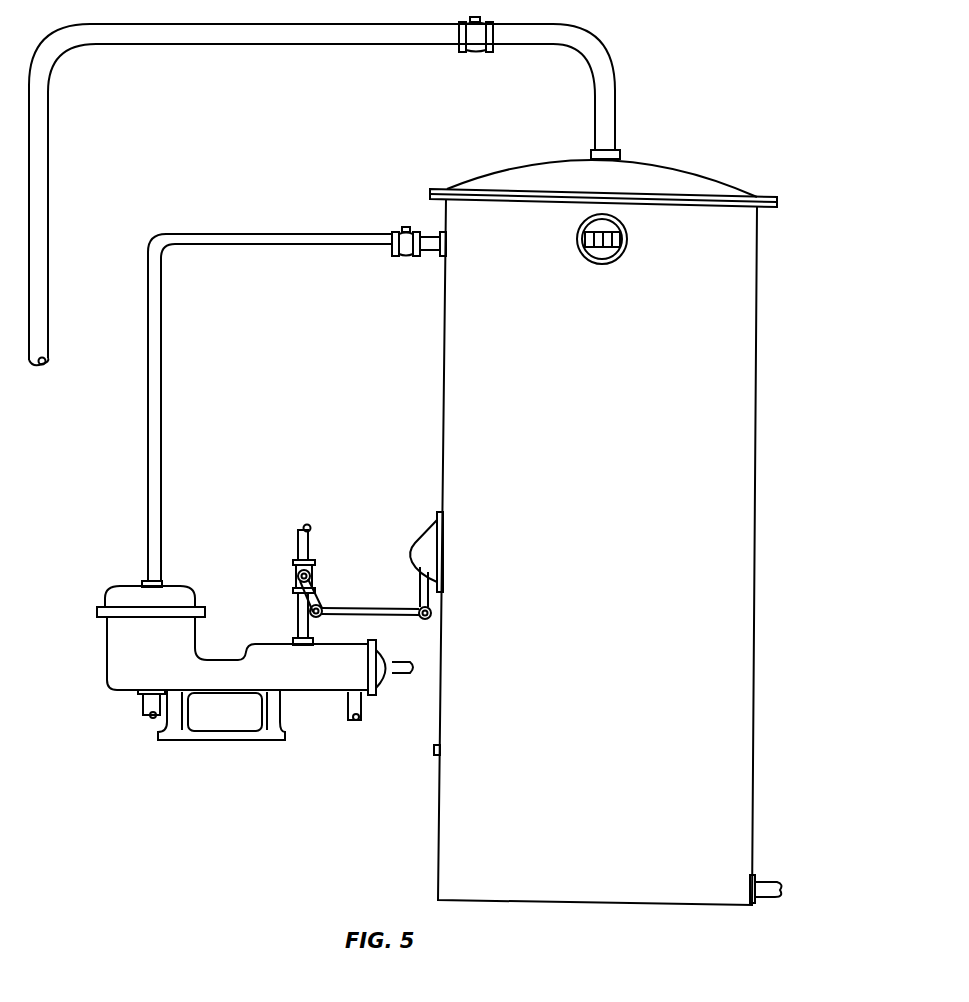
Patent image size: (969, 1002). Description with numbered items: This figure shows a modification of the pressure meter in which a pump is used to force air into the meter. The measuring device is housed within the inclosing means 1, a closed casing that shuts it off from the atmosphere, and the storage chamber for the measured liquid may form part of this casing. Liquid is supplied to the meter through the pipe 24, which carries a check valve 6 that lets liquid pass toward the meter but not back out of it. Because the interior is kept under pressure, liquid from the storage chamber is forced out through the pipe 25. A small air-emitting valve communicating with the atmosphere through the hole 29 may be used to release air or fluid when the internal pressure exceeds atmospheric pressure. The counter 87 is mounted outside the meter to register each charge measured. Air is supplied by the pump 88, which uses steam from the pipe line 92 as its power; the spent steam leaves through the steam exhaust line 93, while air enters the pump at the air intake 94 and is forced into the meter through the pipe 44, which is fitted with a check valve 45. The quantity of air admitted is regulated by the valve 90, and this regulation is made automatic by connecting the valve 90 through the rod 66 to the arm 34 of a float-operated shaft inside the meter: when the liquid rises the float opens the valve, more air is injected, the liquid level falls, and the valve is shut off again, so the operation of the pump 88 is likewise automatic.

The inclosing means 1 is at (445, 440).
The check valve 6 is at (474, 38).
The pipe 24 is at (292, 35).
The pipe 25 is at (765, 884).
The hole 29 is at (430, 752).
The arm 34 is at (426, 583).
The pipe 44 is at (250, 240).
The check valve 45 is at (402, 246).
The rod 66 is at (342, 610).
The counter 87 is at (612, 262).
The pump 88 is at (182, 638).
The valve 90 is at (312, 570).
The pipe line 92 is at (308, 543).
The steam exhaust line 93 is at (360, 700).
The air intake 94 is at (143, 712).